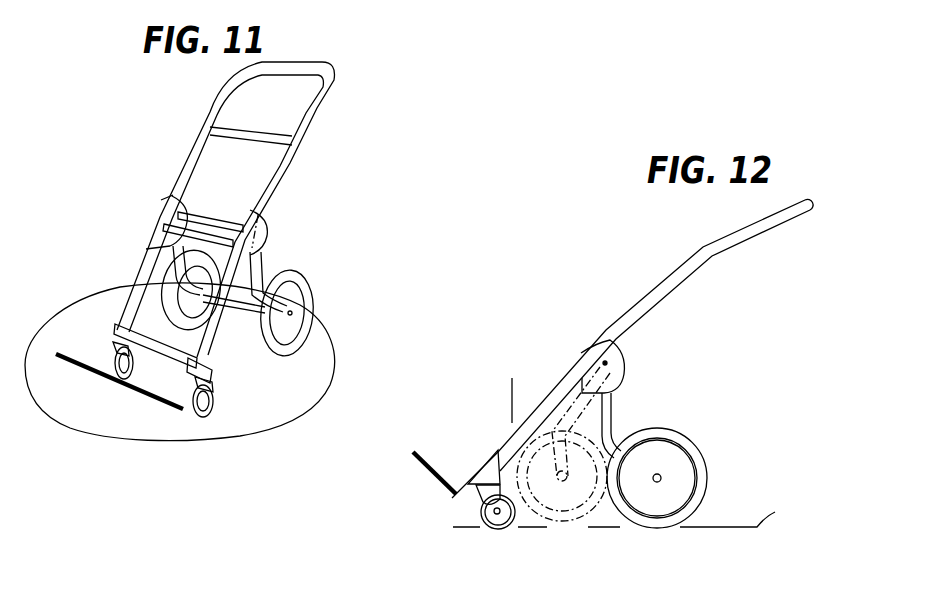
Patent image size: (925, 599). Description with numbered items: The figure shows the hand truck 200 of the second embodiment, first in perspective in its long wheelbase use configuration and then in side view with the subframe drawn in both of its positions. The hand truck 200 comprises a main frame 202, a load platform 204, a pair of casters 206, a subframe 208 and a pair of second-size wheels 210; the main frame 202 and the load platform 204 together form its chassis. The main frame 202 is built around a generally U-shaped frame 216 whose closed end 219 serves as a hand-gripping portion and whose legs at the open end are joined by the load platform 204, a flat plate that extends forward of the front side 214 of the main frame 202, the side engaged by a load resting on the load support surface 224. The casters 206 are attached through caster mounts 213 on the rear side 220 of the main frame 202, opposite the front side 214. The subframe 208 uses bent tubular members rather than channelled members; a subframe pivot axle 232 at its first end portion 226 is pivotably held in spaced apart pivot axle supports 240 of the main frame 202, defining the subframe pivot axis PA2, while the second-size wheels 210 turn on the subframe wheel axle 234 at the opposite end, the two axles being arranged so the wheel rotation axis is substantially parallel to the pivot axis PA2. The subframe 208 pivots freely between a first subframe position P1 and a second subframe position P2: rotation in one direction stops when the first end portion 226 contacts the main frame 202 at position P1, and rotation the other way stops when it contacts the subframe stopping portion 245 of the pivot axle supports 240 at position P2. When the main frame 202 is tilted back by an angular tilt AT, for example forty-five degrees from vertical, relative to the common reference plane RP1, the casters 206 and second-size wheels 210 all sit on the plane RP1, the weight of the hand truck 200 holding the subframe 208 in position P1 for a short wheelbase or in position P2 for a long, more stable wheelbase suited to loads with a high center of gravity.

In FIG. 11, the hand truck 200 is at (170, 172).
In FIG. 12, the hand truck 200 is at (693, 321).
In FIG. 11, the main frame 202 is at (318, 93).
In FIG. 12, the main frame 202 is at (766, 224).
In FIG. 11, the load platform 204 is at (82, 352).
In FIG. 12, the load platform 204 is at (410, 452).
In FIG. 11, the casters 206 is at (192, 413).
In FIG. 12, the casters 206 is at (479, 518).
In FIG. 11, the subframe 208 is at (259, 272).
In FIG. 12, the subframe 208 is at (607, 417).
In FIG. 11, the second-size wheels 210 is at (300, 348).
In FIG. 12, the second-size wheels 210 is at (695, 512).
In FIG. 11, the caster mounts 213 is at (215, 380).
In FIG. 12, the caster mounts 213 is at (472, 484).
In FIG. 12, the front side 214 is at (636, 297).
In FIG. 12, the U-shaped frame 216 is at (688, 263).
In FIG. 11, the closed end 219 is at (323, 70).
In FIG. 12, the closed end 219 is at (803, 202).
In FIG. 12, the rear side 220 is at (710, 263).
In FIG. 12, the load support surface 224 is at (422, 448).
In FIG. 12, the first end portion 226 is at (619, 393).
In FIG. 11, the subframe pivot axle 232 is at (182, 213).
In FIG. 12, the subframe pivot axle 232 is at (581, 418).
In FIG. 11, the subframe wheel axle 234 is at (246, 305).
In FIG. 12, the subframe wheel axle 234 is at (662, 478).
In FIG. 11, the pivot axle supports 240 is at (167, 217).
In FIG. 12, the pivot axle supports 240 is at (580, 375).
In FIG. 12, the subframe stopping portion 245 is at (626, 368).
In FIG. 11, the subframe pivot axis PA2 is at (263, 229).
In FIG. 12, the subframe pivot axis PA2 is at (602, 363).
In FIG. 12, the first subframe position P1 is at (562, 495).
In FIG. 11, the second subframe position P2 is at (350, 268).
In FIG. 12, the second subframe position P2 is at (693, 402).
In FIG. 11, the common reference plane RP1 is at (318, 377).
In FIG. 12, the common reference plane RP1 is at (632, 515).
In FIG. 12, the angular tilt AT is at (537, 402).